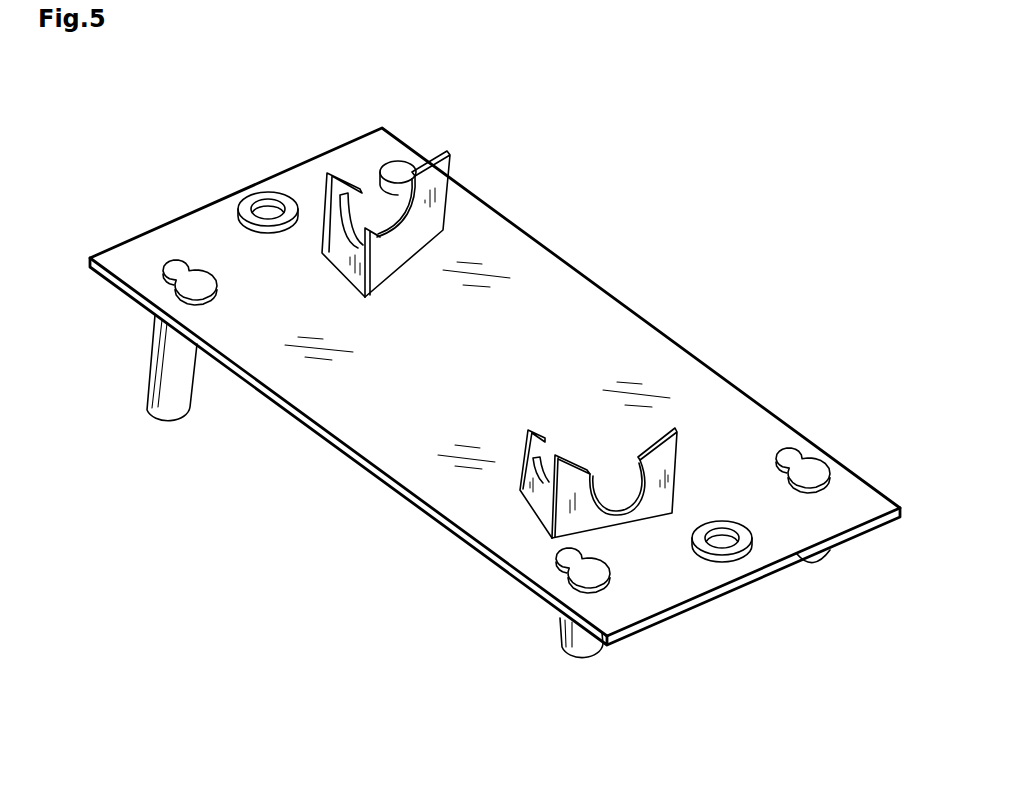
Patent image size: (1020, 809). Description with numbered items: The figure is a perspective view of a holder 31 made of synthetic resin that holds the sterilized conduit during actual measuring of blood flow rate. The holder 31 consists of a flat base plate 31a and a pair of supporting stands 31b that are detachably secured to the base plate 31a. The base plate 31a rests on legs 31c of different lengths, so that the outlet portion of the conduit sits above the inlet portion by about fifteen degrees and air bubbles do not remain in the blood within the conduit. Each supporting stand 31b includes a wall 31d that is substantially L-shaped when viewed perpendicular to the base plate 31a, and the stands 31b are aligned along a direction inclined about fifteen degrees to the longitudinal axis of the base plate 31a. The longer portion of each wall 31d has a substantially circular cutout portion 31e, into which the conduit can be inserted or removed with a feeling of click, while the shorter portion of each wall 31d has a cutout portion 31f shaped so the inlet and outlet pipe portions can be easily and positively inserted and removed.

The holder 31 is at (603, 278).
The base plate 31a is at (358, 432).
The supporting stands 31b is at (435, 150).
The legs 31c is at (171, 412).
The wall 31d is at (442, 172).
The cutout portion 31e is at (397, 217).
The cutout portion 31f is at (345, 250).